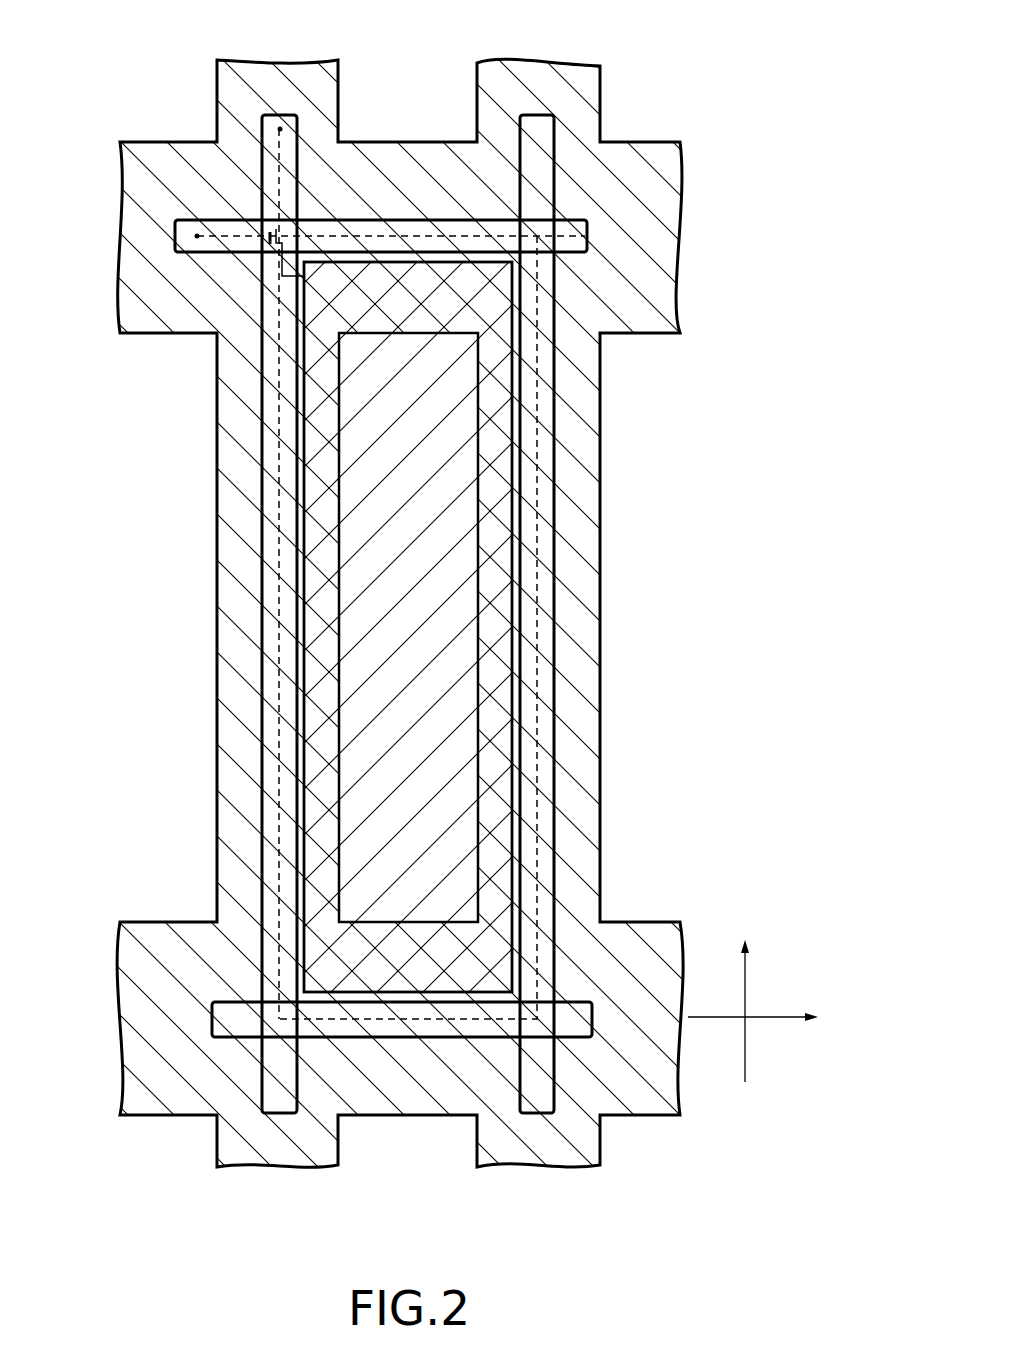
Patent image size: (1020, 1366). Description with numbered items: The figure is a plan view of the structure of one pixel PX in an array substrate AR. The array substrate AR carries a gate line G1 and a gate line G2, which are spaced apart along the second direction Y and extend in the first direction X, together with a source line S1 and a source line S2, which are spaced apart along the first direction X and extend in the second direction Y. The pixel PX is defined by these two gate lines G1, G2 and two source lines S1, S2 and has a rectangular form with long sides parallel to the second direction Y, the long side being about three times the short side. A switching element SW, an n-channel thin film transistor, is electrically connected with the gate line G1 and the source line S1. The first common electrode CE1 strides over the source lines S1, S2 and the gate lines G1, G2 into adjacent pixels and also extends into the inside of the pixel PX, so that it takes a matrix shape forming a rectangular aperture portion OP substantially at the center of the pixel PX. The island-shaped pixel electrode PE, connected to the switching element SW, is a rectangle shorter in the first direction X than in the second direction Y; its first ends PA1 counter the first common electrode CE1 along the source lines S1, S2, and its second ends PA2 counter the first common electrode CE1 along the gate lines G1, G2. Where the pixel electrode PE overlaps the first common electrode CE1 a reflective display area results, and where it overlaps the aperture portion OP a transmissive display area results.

The source line S1 is at (278, 115).
The source line S2 is at (536, 114).
The gate line G1 is at (195, 236).
The gate line G2 is at (212, 1025).
The pixel electrode PE is at (500, 383).
The aperture portion OP is at (472, 792).
The first common electrode CE1 is at (626, 1092).
The pixel PX is at (553, 228).
The array substrate AR is at (690, 220).
The switching element SW is at (264, 264).
The first end PA1 is at (312, 623).
The second end PA2 is at (414, 280).